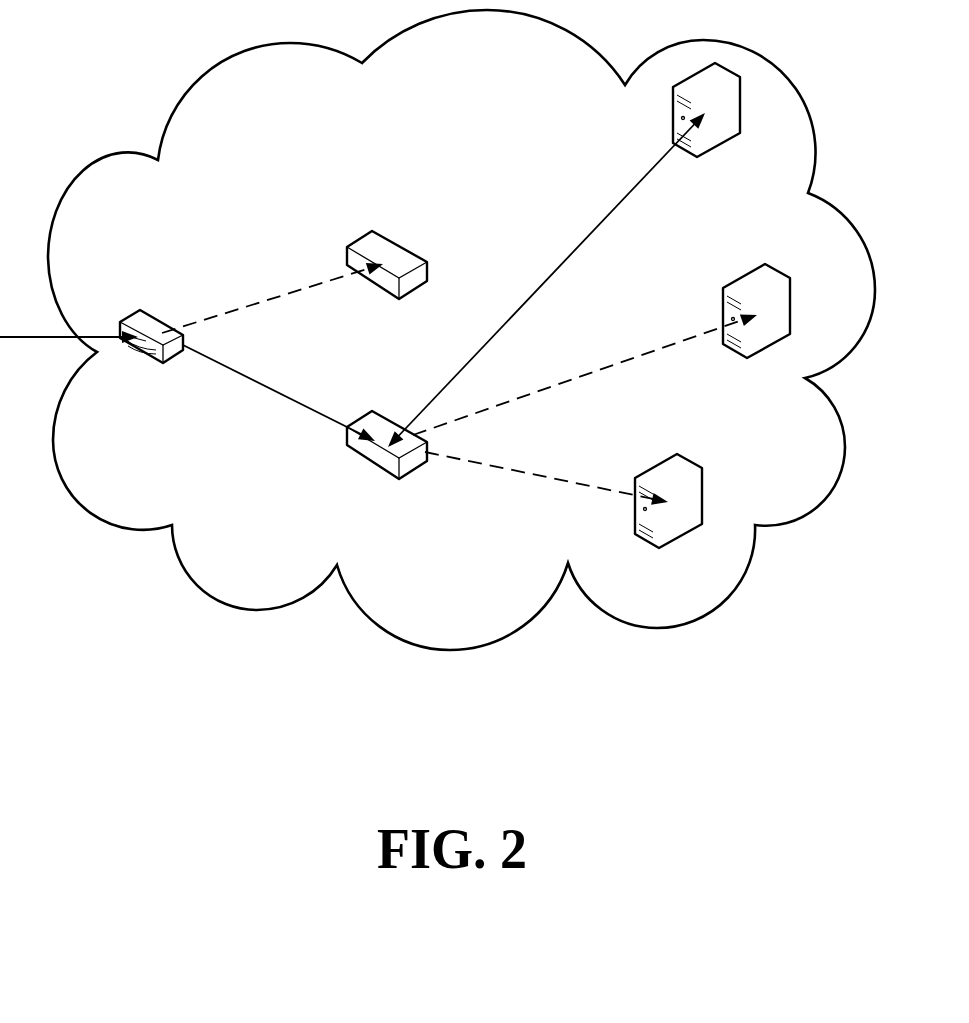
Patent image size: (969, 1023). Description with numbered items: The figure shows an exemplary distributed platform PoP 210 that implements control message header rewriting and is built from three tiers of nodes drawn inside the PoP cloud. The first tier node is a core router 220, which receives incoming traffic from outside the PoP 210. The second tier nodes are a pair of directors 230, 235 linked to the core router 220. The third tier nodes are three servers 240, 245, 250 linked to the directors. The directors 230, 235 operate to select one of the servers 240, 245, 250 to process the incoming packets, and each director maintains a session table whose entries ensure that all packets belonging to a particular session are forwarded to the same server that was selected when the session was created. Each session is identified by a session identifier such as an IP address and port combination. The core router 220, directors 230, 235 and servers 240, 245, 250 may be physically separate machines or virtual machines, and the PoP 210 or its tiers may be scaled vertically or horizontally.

The PoP 210 is at (507, 706).
The core router 220 is at (168, 425).
The director 230 is at (402, 530).
The director 235 is at (402, 346).
The server 240 is at (723, 216).
The server 245 is at (773, 416).
The server 250 is at (685, 608).